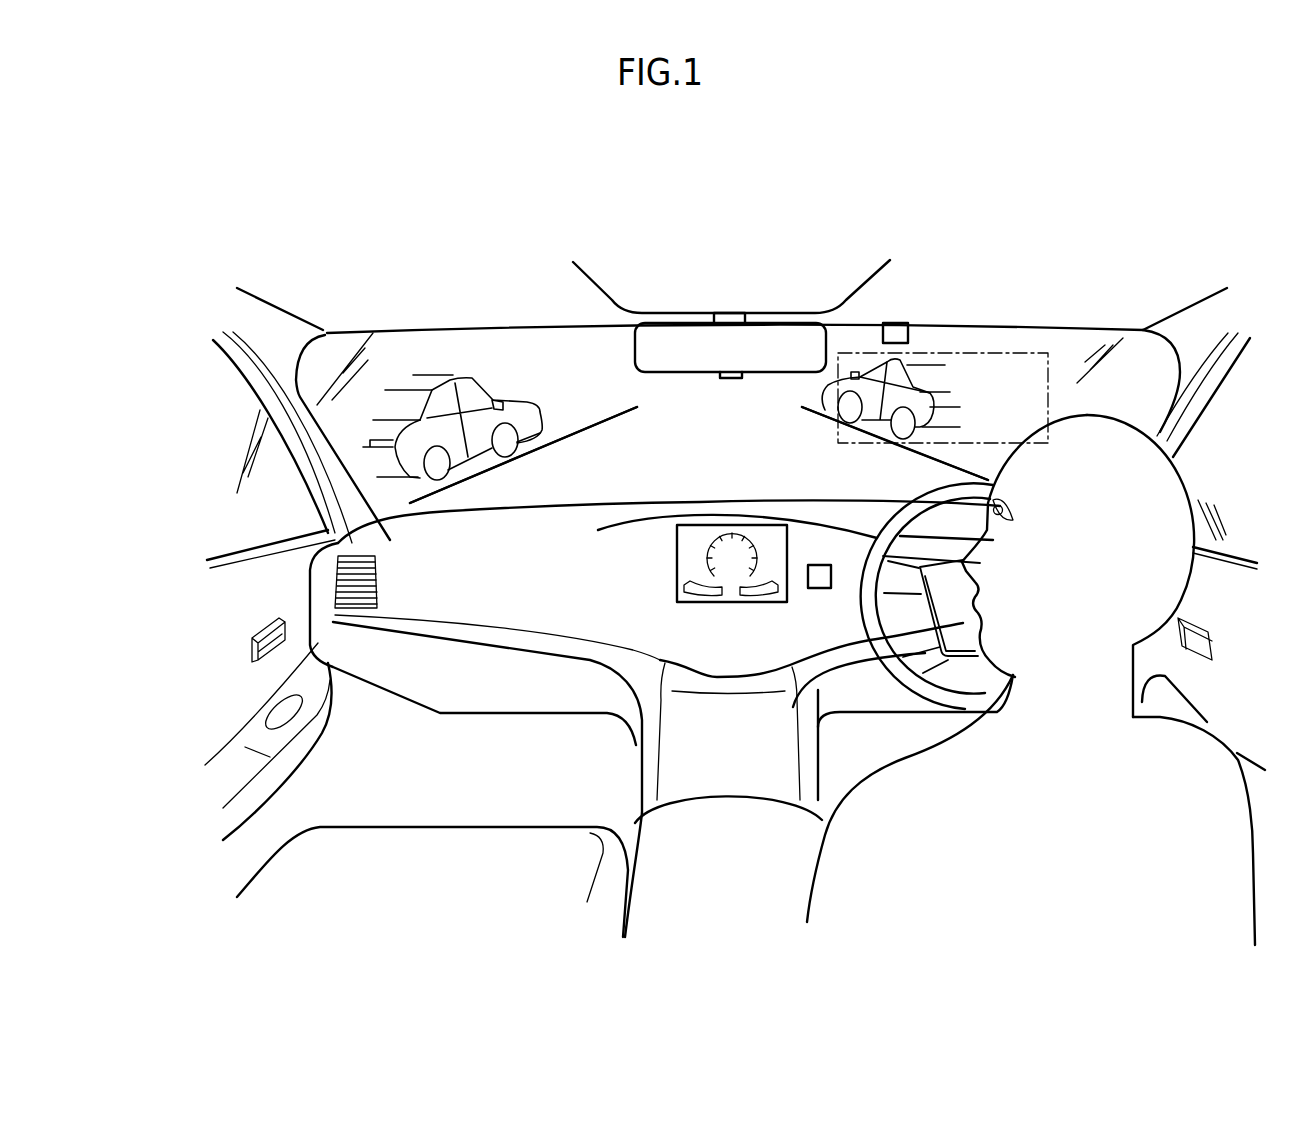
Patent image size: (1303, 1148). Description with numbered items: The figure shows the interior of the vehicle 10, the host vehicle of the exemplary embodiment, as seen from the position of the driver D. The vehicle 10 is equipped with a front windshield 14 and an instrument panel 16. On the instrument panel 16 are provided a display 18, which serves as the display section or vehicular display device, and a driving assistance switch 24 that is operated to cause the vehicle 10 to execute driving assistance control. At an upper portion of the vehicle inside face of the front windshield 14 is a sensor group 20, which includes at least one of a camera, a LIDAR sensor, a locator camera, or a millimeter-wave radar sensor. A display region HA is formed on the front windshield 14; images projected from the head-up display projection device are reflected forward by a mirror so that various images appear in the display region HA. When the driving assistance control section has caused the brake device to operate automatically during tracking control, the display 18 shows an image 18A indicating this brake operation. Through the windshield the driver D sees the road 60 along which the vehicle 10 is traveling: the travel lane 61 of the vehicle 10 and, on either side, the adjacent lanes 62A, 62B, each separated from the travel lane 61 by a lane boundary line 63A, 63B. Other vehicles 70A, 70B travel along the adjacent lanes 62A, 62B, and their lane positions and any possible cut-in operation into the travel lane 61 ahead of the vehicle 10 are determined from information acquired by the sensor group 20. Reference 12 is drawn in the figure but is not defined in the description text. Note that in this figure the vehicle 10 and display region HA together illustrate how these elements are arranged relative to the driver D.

The vehicle 10 is at (191, 405).
The head-up display area 12 is at (985, 304).
The front windshield 14 is at (457, 337).
The instrument panel 16 is at (515, 565).
The display 18 is at (677, 568).
The image 18A is at (753, 598).
The sensor group 20 is at (897, 328).
The driving assistance switch 24 is at (820, 565).
The road 60 is at (683, 437).
The travel lane 61 is at (765, 437).
The adjacent lane 62A is at (582, 400).
The adjacent lane 62B is at (977, 425).
The lane boundary line 63A is at (583, 393).
The lane boundary line 63B is at (962, 467).
The other vehicle 70A is at (430, 380).
The other vehicle 70B is at (917, 360).
The display region HA is at (1048, 402).
The driver D is at (1190, 477).